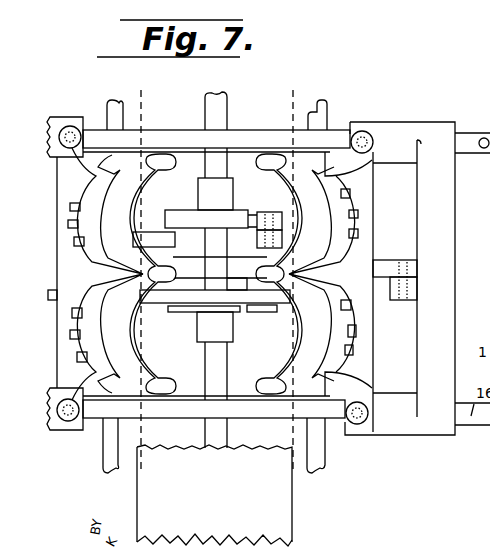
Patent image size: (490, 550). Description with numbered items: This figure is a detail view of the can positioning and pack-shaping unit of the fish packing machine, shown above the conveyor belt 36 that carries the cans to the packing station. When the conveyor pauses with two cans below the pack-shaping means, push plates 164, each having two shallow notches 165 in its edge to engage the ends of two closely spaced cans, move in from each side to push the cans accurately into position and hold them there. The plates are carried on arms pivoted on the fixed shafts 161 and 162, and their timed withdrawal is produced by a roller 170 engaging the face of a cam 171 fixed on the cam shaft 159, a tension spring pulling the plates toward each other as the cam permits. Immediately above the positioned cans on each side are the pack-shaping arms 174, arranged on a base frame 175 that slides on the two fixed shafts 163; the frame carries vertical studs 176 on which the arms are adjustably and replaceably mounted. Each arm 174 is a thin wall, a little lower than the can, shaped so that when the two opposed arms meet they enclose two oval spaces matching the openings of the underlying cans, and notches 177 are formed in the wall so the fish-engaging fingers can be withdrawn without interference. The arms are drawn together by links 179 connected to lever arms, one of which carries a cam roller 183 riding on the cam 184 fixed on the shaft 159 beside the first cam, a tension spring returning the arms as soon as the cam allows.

The conveyor belt 36 is at (236, 511).
The cam shaft 159 is at (222, 360).
The fixed shaft 161 is at (108, 451).
The fixed shaft 162 is at (314, 462).
The fixed shafts 163 is at (466, 150).
The push plates 164 is at (138, 193).
The shallow notches 165 is at (290, 197).
The roller 170 is at (288, 222).
The cam 171 is at (210, 215).
The pack-shaping arms 174 is at (350, 193).
The base frame 175 is at (419, 369).
The vertical studs 176 is at (369, 432).
The notches 177 is at (358, 220).
The links 179 is at (386, 266).
The cam roller 183 is at (286, 302).
The cam 184 is at (188, 312).